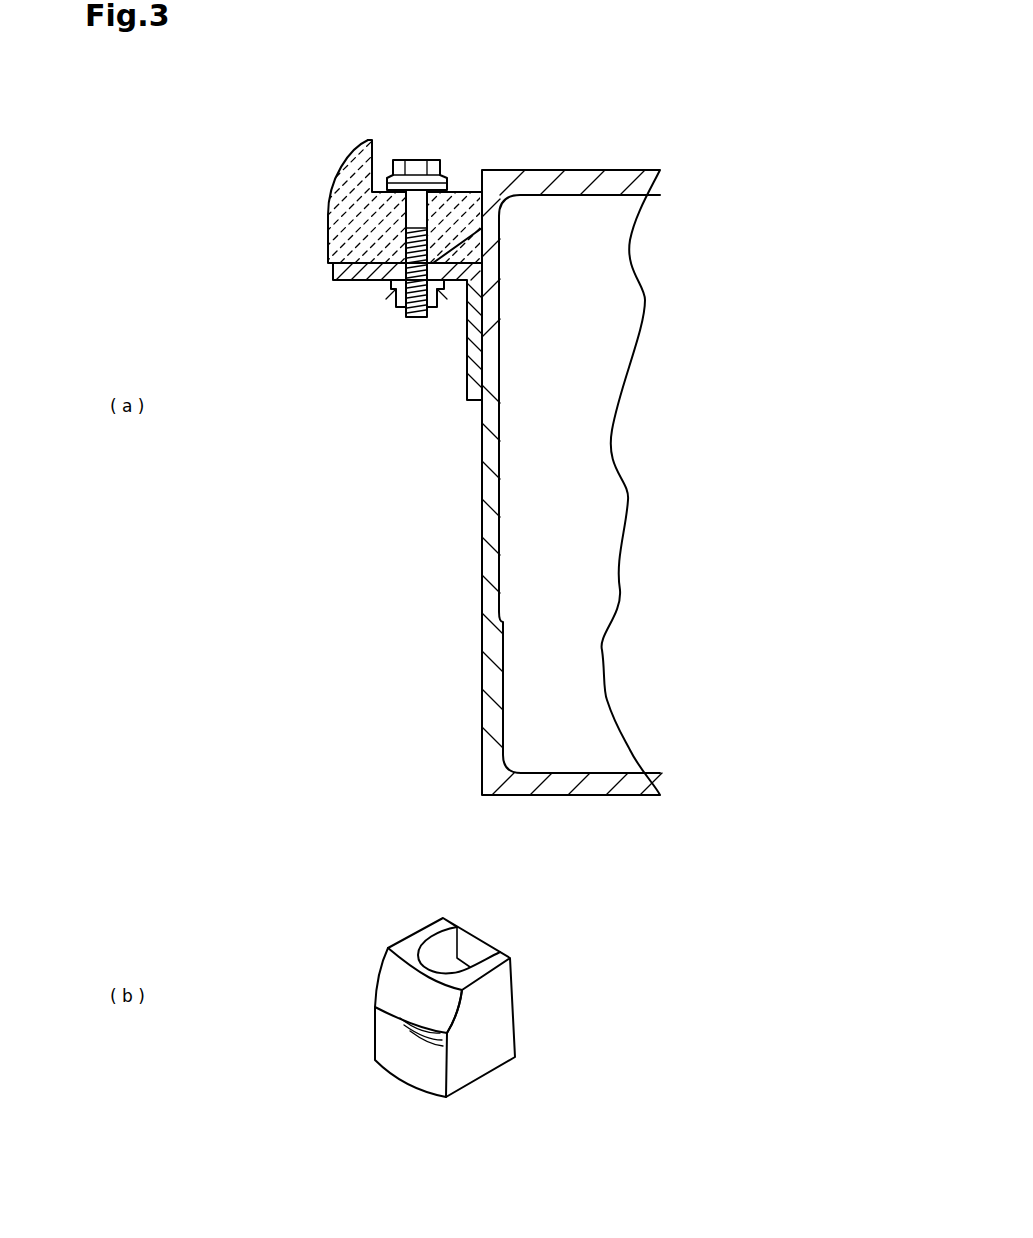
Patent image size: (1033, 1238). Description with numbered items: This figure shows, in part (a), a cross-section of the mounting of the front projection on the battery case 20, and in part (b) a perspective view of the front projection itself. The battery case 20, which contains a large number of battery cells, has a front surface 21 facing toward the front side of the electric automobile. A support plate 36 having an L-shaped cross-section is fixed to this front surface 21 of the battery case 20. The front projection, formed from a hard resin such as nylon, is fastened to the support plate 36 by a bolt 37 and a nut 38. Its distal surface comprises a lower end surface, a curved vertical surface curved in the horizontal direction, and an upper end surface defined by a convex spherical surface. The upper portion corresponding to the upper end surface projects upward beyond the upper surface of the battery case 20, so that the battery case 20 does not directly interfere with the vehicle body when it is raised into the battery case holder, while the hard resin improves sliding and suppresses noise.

The battery case 20 is at (623, 170).
The front surface 21 is at (480, 555).
The support plate 36 is at (468, 352).
The bolt 37 is at (417, 160).
The nut 38 is at (395, 298).